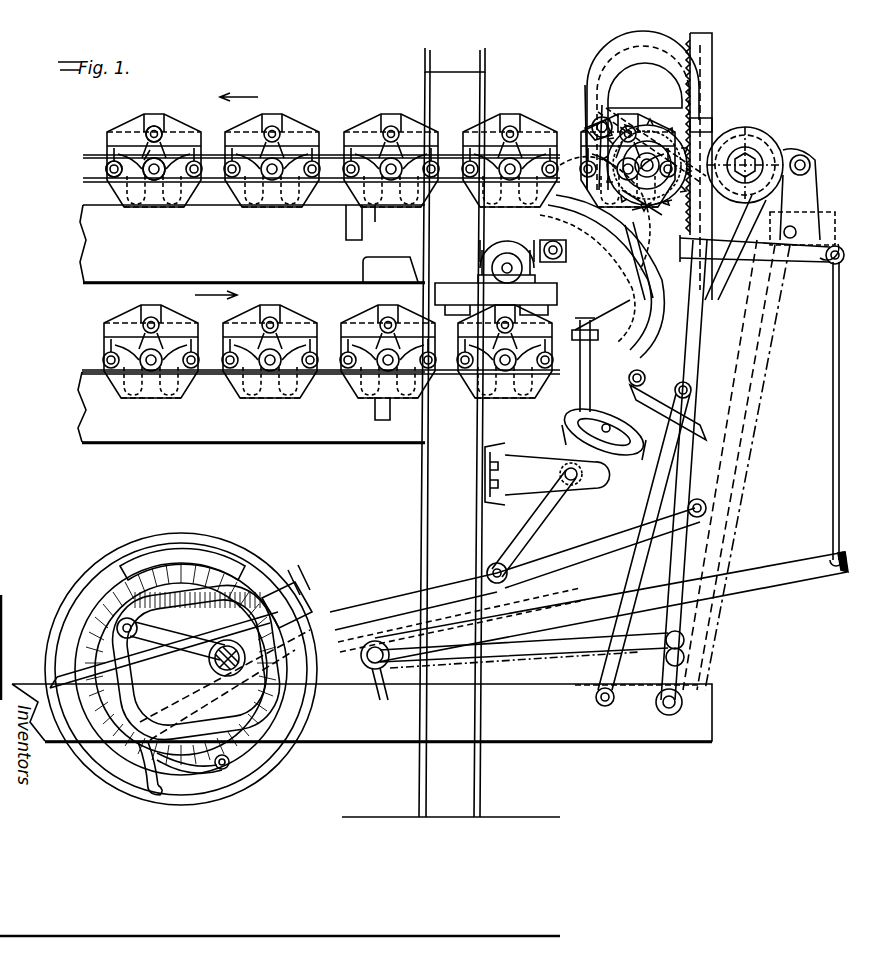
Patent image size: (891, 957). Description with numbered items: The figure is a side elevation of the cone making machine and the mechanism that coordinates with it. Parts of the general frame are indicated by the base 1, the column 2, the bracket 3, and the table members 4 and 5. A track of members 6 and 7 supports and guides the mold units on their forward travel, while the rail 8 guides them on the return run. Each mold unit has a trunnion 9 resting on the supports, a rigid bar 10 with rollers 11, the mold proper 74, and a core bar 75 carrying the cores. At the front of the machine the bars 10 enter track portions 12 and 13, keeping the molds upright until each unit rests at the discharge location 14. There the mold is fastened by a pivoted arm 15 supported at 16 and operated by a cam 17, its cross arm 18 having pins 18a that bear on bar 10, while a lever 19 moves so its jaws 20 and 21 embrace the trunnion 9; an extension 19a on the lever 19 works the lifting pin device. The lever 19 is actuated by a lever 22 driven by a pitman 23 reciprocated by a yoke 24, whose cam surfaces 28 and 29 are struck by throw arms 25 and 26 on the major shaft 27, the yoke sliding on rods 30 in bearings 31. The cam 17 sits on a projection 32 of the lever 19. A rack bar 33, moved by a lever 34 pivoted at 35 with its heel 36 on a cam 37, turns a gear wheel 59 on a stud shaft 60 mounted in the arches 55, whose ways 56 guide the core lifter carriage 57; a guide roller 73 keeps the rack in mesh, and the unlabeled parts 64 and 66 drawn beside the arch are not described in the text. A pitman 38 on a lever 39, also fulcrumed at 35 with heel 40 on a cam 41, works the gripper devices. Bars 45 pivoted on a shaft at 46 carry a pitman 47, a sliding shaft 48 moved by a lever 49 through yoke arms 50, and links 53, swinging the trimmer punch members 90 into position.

The frame 1 is at (372, 728).
The frame 2 is at (425, 525).
The frame 3 is at (490, 455).
The frame 4 is at (82, 262).
The frame 5 is at (80, 412).
The track member 6 is at (100, 155).
The track member 7 is at (85, 181).
The rail 8 is at (82, 372).
The trunnion 9 is at (154, 174).
The bar 10 is at (140, 172).
The rollers 11 is at (106, 167).
The track portion 12 is at (576, 365).
The track portion 13 is at (485, 215).
The discharge location 14 is at (482, 230).
The pivoted arm 15 is at (612, 322).
The support 16 is at (602, 276).
The cam 17 is at (566, 418).
The cross arm 18 is at (605, 208).
The pins 18a is at (545, 250).
The lever 19 is at (712, 292).
The extension 19a is at (812, 170).
The jaw 20 is at (785, 215).
The jaw 21 is at (640, 262).
The lever 22 is at (555, 510).
The pitman 23 is at (372, 604).
The yoke 24 is at (286, 590).
The throw arm 25 is at (188, 634).
The throw arm 26 is at (185, 690).
The major shaft 27 is at (226, 676).
The cam surface 28 is at (205, 570).
The cam surface 29 is at (148, 780).
The slide rods 30 is at (62, 680).
The bearings 31 is at (300, 570).
The projection 32 is at (646, 388).
The rack bar 33 is at (712, 43).
The lever 34 is at (585, 562).
The pivot 35 is at (378, 672).
The heel 36 is at (228, 770).
The cam 37 is at (130, 582).
The pitman 38 is at (840, 448).
The lever 39 is at (752, 585).
The heel 40 is at (205, 770).
The cam 41 is at (100, 612).
The bars 45 is at (712, 530).
The shaft 46 is at (668, 716).
The pitman 47 is at (755, 450).
The sliding shaft 48 is at (688, 634).
The lever 49 is at (392, 703).
The yoke arms 50 is at (600, 660).
The links 53 is at (647, 167).
The arches 55 is at (592, 58).
The ways 56 is at (595, 46).
The carriage 57 is at (590, 87).
The gear wheel 59 is at (650, 152).
The stud shaft 60 is at (662, 152).
The pawl 64 is at (592, 130).
The pinion 66 is at (594, 120).
The guide roller 73 is at (755, 132).
The mold 74 is at (107, 135).
The core bar 75 is at (140, 120).
The punch members 90 is at (800, 233).